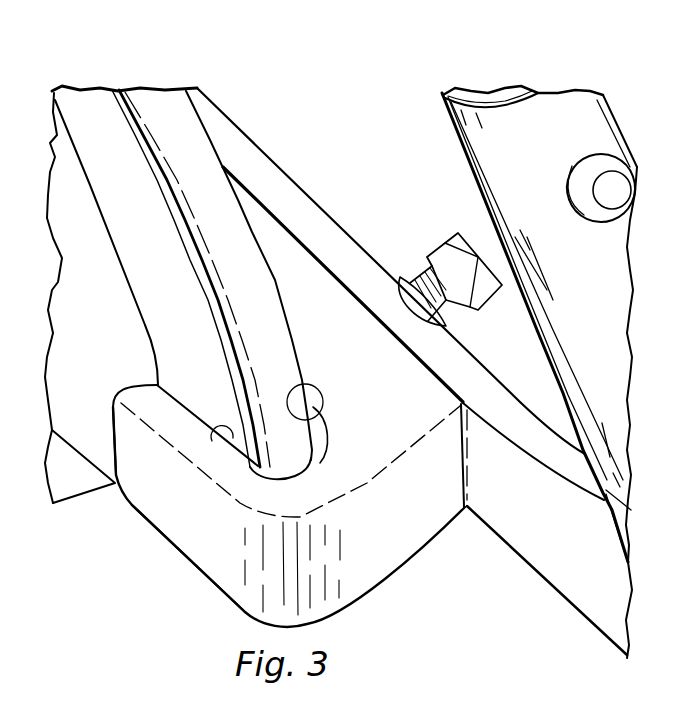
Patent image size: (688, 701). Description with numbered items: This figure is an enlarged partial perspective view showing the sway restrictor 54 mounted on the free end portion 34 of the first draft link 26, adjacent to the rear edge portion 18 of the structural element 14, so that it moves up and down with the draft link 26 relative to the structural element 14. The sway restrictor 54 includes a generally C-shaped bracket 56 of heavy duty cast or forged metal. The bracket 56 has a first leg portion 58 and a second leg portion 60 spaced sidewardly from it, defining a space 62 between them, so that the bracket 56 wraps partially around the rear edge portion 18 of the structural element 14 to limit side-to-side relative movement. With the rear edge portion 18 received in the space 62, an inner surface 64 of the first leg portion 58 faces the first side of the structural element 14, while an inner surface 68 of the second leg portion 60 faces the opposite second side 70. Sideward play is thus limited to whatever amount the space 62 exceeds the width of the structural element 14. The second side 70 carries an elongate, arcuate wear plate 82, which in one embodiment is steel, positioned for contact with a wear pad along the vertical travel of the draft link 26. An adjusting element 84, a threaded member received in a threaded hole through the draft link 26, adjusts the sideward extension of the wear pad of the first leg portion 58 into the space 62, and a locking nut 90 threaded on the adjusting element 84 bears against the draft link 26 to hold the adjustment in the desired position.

The structural element 14 is at (212, 133).
The wear plate 82 is at (132, 110).
The first leg portion 58 is at (287, 223).
The rear edge portion 18 is at (295, 344).
The inner surface 64 is at (305, 385).
The space 62 is at (320, 428).
The inner surface 68 is at (214, 428).
The second side 70 is at (128, 365).
The sway restrictor 54 is at (381, 597).
The second leg portion 60 is at (130, 513).
The bracket 56 is at (192, 567).
The adjusting element 84 is at (440, 237).
The locking nut 90 is at (447, 324).
The first draft link 26 is at (545, 529).
The free end portion 34 is at (497, 547).